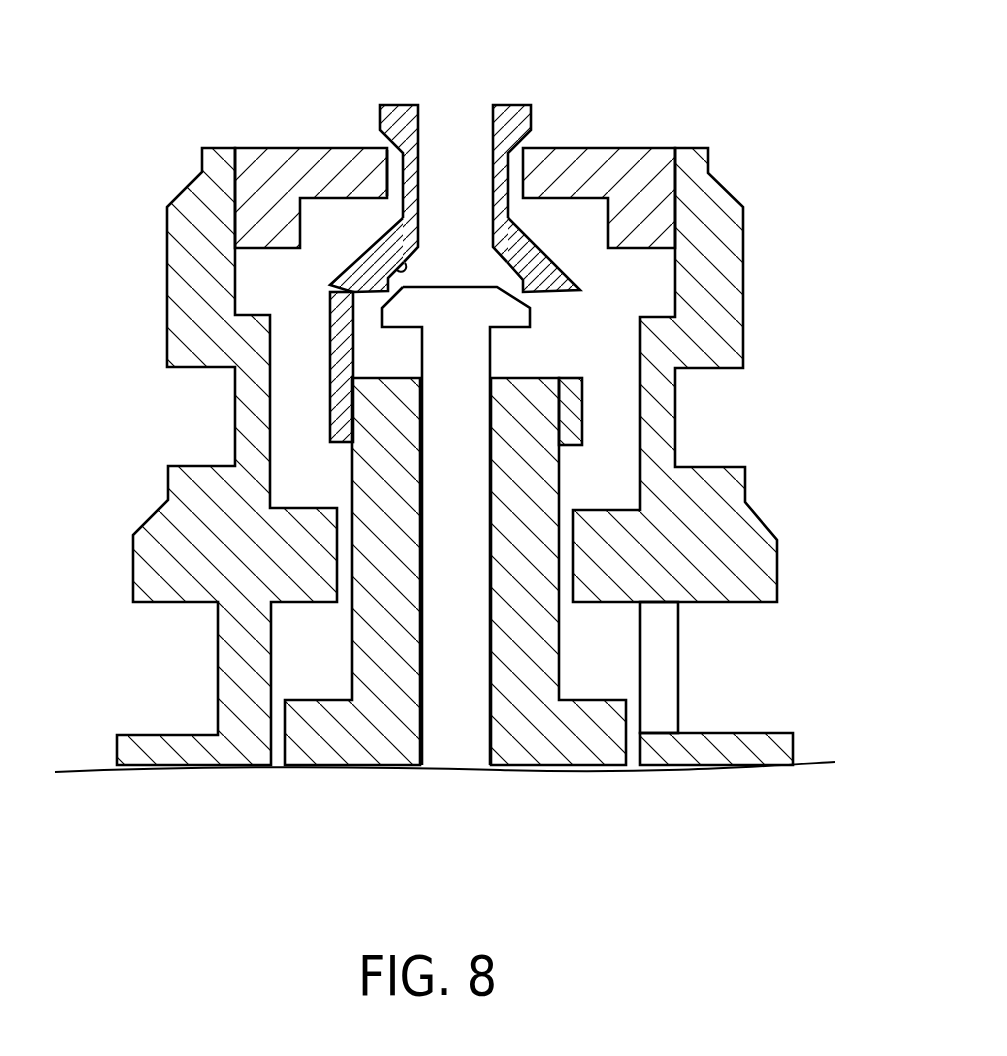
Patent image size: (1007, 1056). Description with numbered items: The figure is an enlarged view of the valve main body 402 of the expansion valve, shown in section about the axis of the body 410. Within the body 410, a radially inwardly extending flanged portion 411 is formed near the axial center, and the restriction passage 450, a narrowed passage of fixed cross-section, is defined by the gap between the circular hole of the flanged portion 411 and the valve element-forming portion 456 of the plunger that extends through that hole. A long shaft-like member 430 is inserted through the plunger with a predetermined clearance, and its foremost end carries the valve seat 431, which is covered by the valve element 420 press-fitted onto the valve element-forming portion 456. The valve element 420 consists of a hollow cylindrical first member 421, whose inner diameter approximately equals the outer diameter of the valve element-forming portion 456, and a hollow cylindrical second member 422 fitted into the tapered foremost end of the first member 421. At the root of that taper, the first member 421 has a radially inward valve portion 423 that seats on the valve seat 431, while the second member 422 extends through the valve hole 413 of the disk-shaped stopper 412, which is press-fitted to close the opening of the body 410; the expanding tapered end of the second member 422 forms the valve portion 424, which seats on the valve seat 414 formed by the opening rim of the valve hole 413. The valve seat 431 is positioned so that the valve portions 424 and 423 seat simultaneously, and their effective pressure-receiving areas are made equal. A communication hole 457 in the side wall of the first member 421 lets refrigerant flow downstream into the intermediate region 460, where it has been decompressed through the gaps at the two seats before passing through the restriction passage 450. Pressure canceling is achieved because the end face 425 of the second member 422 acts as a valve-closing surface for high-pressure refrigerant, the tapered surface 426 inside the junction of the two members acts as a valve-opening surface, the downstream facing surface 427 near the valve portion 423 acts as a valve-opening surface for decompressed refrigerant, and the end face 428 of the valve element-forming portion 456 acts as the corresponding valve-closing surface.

The valve main body 402 is at (725, 405).
The body 410 is at (173, 416).
The flanged portion 411 is at (338, 549).
The stopper 412 is at (267, 146).
The valve hole 413 is at (537, 147).
The valve seat 414 is at (345, 147).
The valve element 420 is at (218, 232).
The first member 421 is at (330, 418).
The second member 422 is at (533, 125).
The valve portion 423 is at (560, 276).
The valve portion 424 is at (392, 145).
The end face 425 is at (408, 105).
The tapered surface 426 is at (392, 264).
The downstream facing surface 427 is at (217, 178).
The end face 428 is at (387, 375).
The shaft-like member 430 is at (217, 549).
The valve seat 431 is at (195, 346).
The restriction passage 450 is at (565, 573).
The valve element-forming portion 456 is at (218, 549).
The communication hole 457 is at (535, 296).
The intermediate region 460 is at (618, 417).